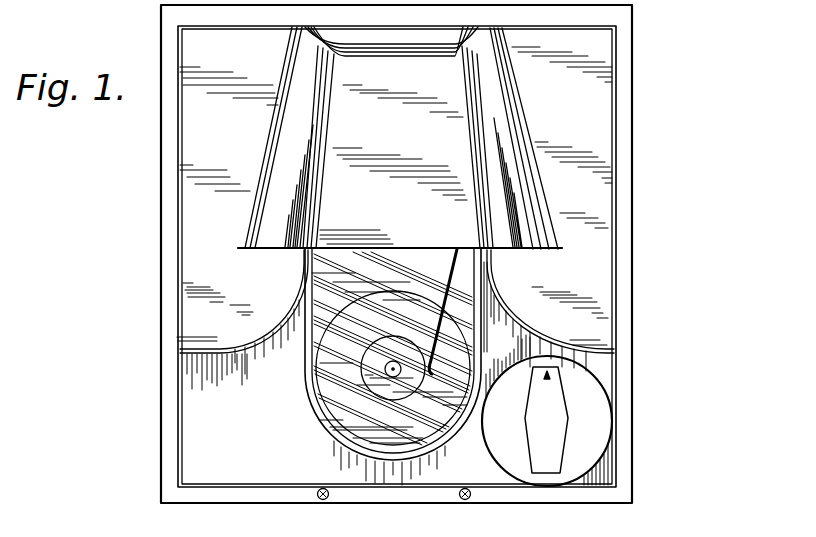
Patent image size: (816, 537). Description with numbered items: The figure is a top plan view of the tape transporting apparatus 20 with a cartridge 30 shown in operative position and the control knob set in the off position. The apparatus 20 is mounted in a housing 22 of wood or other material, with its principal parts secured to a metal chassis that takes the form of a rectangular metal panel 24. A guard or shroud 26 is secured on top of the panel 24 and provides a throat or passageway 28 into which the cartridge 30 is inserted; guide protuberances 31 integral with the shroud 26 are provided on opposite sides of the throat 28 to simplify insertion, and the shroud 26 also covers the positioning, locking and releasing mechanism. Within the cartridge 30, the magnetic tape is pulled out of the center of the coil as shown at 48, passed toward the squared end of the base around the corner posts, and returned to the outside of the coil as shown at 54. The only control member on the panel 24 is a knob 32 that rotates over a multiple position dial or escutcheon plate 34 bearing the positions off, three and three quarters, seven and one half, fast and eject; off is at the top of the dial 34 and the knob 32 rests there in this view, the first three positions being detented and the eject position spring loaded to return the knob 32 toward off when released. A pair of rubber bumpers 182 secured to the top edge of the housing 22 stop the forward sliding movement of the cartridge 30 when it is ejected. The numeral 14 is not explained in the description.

The hood bottom edge 14 is at (400, 124).
The tape transporting apparatus 20 is at (640, 273).
The housing 22 is at (627, 483).
The metal panel 24 is at (397, 373).
The guard or shroud 26 is at (515, 108).
The throat or passageway 28 is at (298, 313).
The cartridge 30 is at (330, 433).
The guide protuberances 31 is at (395, 301).
The knob 32 is at (558, 402).
The multiple position dial or escutcheon plate 34 is at (605, 427).
The tape pulled out of the center of the coil 48 is at (447, 265).
The tape returning to the outside of the coil 54 is at (332, 262).
The rubber bumpers 182 is at (460, 500).